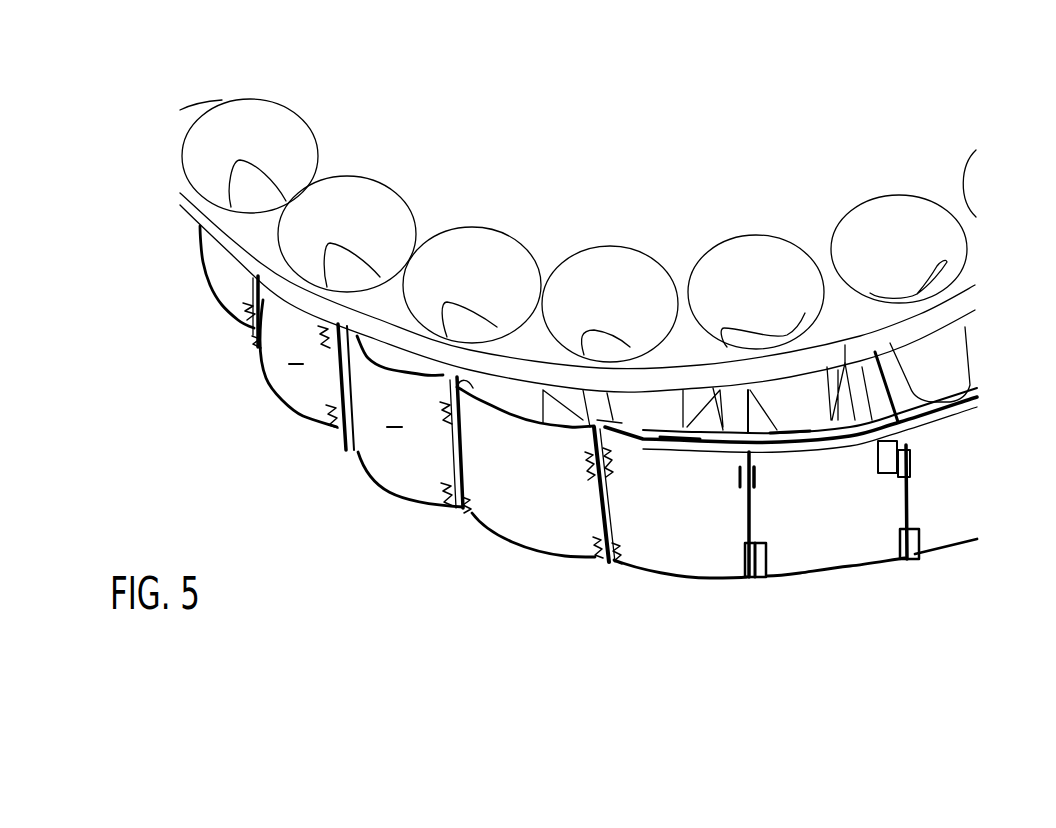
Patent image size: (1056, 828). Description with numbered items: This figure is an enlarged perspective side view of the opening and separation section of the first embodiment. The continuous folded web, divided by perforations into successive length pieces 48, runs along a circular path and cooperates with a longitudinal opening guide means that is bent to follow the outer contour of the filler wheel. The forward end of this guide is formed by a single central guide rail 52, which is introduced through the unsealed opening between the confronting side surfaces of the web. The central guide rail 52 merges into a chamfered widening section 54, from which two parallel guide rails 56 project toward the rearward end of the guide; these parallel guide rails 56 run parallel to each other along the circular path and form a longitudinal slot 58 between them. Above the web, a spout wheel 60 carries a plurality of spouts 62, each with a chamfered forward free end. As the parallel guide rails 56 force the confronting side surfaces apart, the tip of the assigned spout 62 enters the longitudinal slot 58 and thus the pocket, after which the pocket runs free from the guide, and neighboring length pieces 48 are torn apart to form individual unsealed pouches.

The length piece 48 is at (605, 578).
The central guide rail 52 is at (968, 395).
The chamfered widening section 54 is at (933, 430).
The parallel guide rails 56 is at (684, 452).
The longitudinal slot 58 is at (845, 345).
The spout wheel 60 is at (690, 139).
The spouts 62 is at (596, 277).